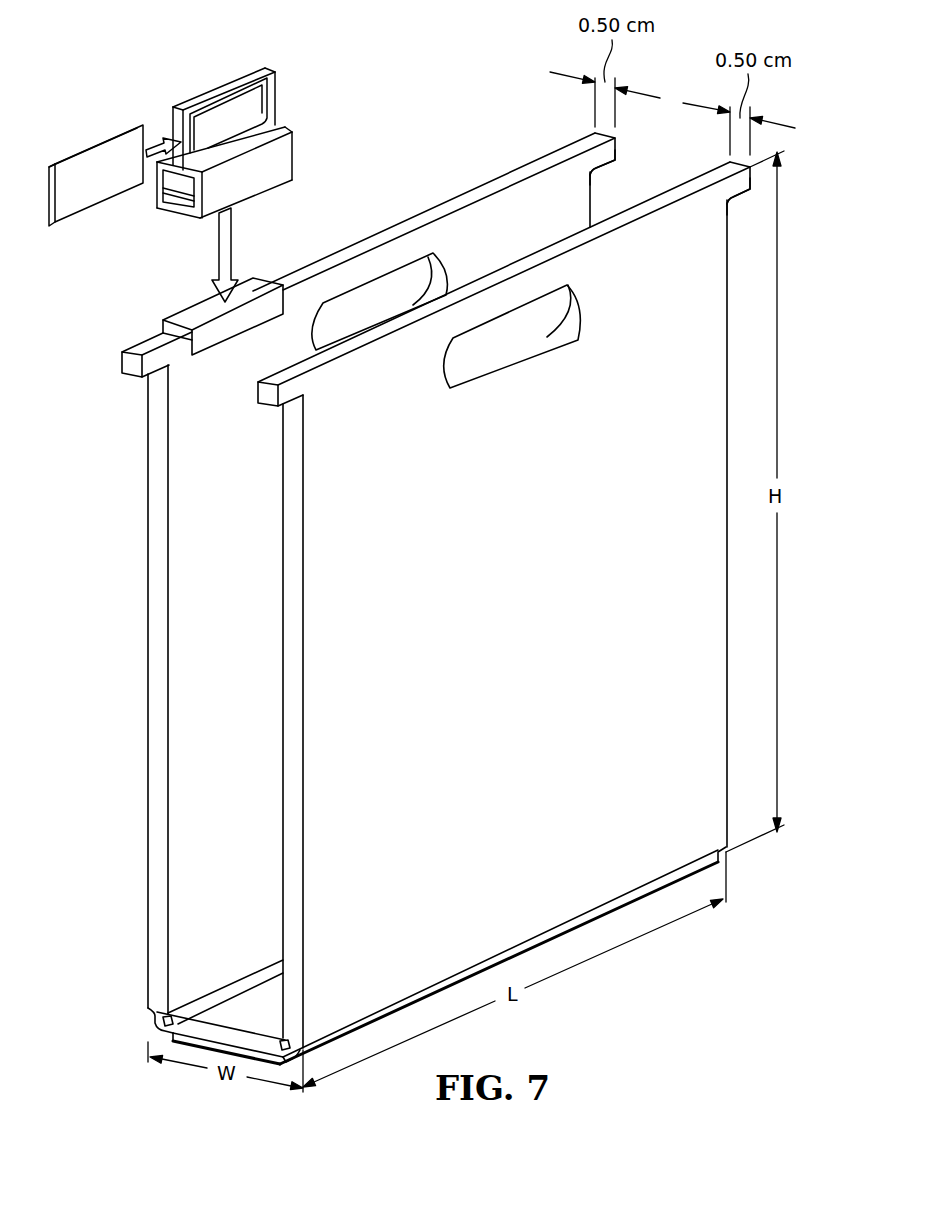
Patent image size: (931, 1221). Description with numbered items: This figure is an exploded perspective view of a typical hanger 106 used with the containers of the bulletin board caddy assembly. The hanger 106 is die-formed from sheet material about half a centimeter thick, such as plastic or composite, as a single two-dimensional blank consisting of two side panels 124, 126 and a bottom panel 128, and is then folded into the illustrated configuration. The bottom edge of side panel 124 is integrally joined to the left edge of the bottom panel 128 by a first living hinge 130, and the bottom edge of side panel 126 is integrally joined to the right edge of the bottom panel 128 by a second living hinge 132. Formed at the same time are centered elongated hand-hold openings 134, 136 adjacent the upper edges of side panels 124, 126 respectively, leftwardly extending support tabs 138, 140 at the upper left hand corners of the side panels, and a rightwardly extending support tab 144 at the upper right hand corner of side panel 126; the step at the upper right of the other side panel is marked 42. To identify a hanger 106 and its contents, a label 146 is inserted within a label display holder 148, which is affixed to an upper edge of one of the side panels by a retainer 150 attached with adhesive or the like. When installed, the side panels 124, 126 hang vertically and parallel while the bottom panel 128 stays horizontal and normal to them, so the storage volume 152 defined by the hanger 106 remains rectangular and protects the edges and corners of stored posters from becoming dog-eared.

The hanger 106 is at (474, 126).
The side panel 124 is at (155, 711).
The side panel 126 is at (298, 760).
The bottom panel 128 is at (235, 1038).
The first living hinge 130 is at (162, 1027).
The second living hinge 132 is at (288, 1058).
The hand-hold opening 134 is at (388, 284).
The hand-hold opening 136 is at (541, 306).
The support tab 138 is at (135, 364).
The support tab 140 is at (268, 393).
The notch 42 is at (602, 153).
The support tab 144 is at (737, 183).
The label 146 is at (78, 168).
The label display holder 148 is at (200, 98).
The retainer 150 is at (193, 312).
The storage volume 152 is at (236, 612).